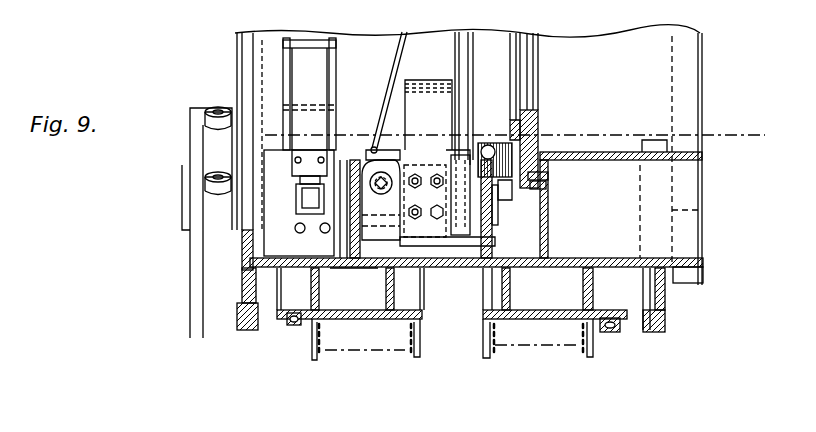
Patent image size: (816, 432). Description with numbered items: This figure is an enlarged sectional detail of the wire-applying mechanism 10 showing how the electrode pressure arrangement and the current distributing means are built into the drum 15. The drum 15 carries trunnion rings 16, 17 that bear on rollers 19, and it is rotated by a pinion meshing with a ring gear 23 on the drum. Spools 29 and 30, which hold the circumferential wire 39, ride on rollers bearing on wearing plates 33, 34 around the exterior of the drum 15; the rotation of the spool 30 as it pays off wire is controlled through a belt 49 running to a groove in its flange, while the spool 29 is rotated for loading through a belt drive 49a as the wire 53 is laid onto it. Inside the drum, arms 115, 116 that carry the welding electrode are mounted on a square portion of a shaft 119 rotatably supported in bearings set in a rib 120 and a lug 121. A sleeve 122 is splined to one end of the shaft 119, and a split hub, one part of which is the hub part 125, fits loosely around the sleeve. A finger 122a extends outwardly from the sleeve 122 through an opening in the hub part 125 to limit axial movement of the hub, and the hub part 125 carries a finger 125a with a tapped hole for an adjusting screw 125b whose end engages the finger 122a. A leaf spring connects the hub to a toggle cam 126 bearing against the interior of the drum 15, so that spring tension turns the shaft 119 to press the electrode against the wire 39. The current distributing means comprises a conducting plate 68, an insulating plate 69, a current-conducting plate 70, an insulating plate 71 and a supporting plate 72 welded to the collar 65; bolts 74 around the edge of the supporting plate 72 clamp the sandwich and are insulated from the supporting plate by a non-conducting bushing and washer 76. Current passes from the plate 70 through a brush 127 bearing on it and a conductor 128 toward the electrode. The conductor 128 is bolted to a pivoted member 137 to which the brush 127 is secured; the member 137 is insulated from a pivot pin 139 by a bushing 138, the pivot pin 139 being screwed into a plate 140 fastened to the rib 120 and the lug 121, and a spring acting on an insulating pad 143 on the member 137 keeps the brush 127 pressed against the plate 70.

The wire-applying mechanism 10 is at (277, 177).
The drum 15 is at (430, 270).
The trunnion ring 16 is at (247, 330).
The trunnion ring 17 is at (667, 327).
The rollers 19 is at (702, 210).
The ring gear 23 is at (690, 284).
The spool 29 is at (320, 358).
The spool 30 is at (494, 358).
The wearing plate 33 is at (350, 293).
The wearing plate 34 is at (553, 270).
The circumferential wire 39 is at (578, 348).
The belt 49 is at (612, 333).
The belt drive 49a is at (290, 330).
The wire 53 is at (390, 350).
The collar 65 is at (607, 149).
The conducting plate 68 is at (506, 50).
The insulating plate 69 is at (518, 34).
The current-conducting plate 70 is at (524, 36).
The insulating plate 71 is at (532, 38).
The supporting plate 72 is at (535, 100).
The bolts 74 is at (548, 173).
The non-conducting bushing and washer 76 is at (547, 184).
The arm 115 is at (384, 52).
The arm 116 is at (470, 50).
The shaft 119 is at (512, 194).
The rib 120 is at (352, 262).
The lug 121 is at (493, 240).
The sleeve 122 is at (340, 226).
The finger 122a is at (300, 196).
The hub part 125 is at (294, 228).
The finger 125a is at (318, 160).
The adjusting screw 125b is at (311, 150).
The toggle cam 126 is at (332, 45).
The brush 127 is at (489, 142).
The conductor 128 is at (432, 80).
The pivoted member 137 is at (402, 151).
The bushing 138 is at (456, 150).
The pivot pin 139 is at (498, 232).
The plate 140 is at (426, 228).
The insulating pad 143 is at (386, 152).